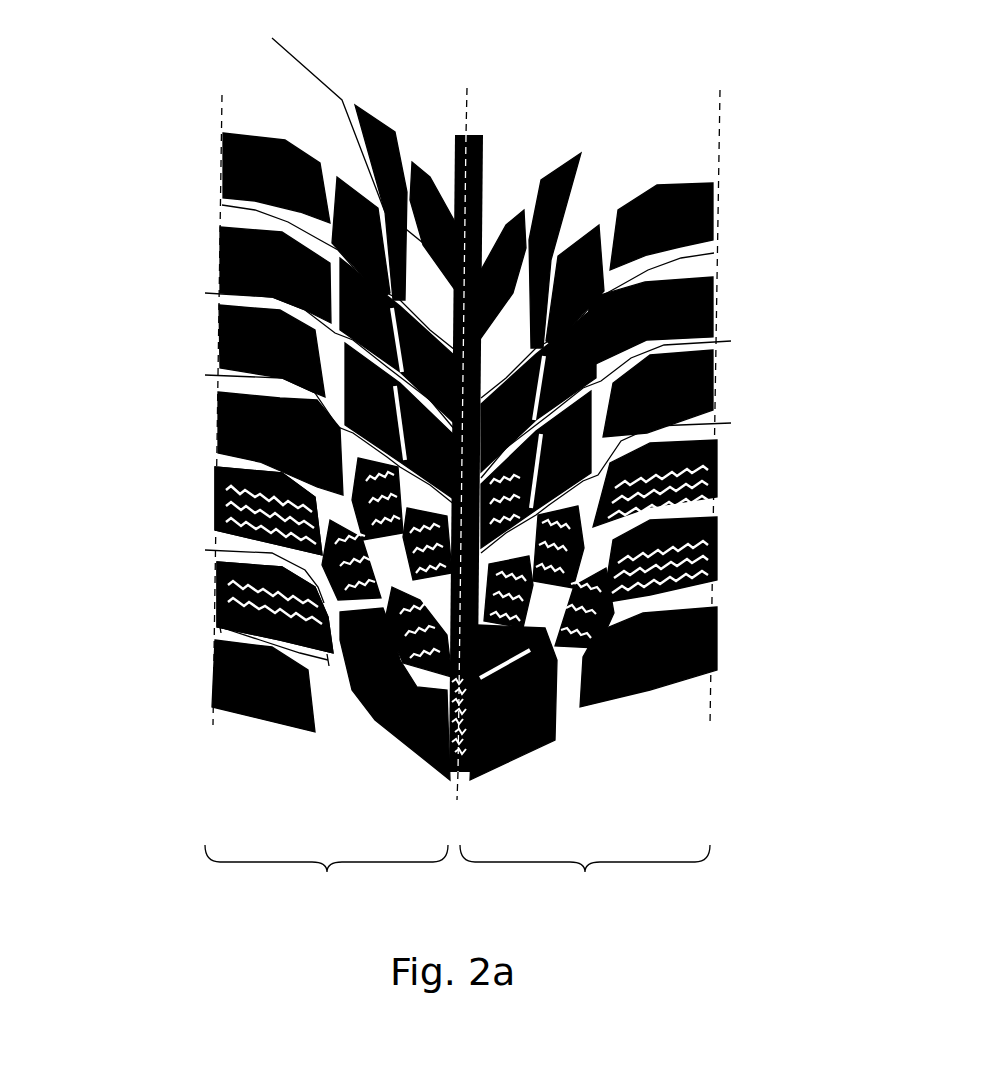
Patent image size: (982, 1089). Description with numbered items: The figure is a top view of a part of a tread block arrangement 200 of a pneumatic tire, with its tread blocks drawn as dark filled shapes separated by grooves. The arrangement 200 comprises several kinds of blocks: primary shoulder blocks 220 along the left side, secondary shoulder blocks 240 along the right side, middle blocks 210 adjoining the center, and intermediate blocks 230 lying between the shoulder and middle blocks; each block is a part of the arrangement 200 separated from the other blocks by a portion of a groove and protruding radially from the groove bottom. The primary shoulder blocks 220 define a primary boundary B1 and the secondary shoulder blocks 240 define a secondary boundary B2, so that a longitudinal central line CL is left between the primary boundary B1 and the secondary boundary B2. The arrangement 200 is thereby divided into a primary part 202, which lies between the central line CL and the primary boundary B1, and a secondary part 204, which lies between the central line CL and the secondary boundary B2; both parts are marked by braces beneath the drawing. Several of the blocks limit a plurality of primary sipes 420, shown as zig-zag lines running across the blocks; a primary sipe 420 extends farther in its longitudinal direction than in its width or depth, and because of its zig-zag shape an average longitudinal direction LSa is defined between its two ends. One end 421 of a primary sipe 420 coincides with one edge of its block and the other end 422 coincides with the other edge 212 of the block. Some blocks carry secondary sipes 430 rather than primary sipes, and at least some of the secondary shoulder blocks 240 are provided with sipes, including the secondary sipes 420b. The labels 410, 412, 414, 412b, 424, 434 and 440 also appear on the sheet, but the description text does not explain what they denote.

The tread block arrangement 200 is at (754, 98).
The primary part 202 is at (326, 874).
The secondary part 204 is at (585, 874).
The middle blocks 210 is at (748, 358).
The edge of the tread block 212 is at (374, 120).
The primary shoulder blocks 220 is at (222, 161).
The intermediate blocks 230 is at (762, 232).
The secondary shoulder blocks 240 is at (715, 186).
The siped block 410 is at (274, 560).
The first siped block 412 is at (215, 467).
The second siped block 414 is at (217, 523).
The siped block 412b is at (714, 449).
The primary sipe 420 is at (215, 490).
The secondary sipes 420b is at (714, 488).
The end of the primary sipe 421 is at (241, 569).
The another end of the primary sipe 422 is at (250, 590).
The sipe 424 is at (256, 600).
The secondary sipes 430 is at (703, 755).
The block edge 434 is at (690, 808).
The center sipe marks 440 is at (458, 776).
The central line CL is at (482, 441).
The primary boundary B1 is at (213, 690).
The secondary boundary B2 is at (712, 690).
The average longitudinal direction LSa is at (197, 710).